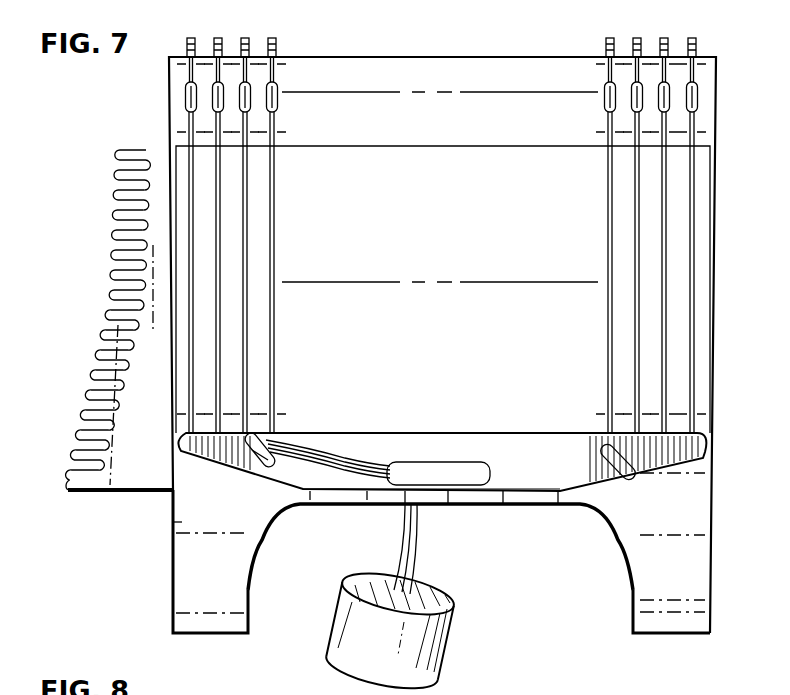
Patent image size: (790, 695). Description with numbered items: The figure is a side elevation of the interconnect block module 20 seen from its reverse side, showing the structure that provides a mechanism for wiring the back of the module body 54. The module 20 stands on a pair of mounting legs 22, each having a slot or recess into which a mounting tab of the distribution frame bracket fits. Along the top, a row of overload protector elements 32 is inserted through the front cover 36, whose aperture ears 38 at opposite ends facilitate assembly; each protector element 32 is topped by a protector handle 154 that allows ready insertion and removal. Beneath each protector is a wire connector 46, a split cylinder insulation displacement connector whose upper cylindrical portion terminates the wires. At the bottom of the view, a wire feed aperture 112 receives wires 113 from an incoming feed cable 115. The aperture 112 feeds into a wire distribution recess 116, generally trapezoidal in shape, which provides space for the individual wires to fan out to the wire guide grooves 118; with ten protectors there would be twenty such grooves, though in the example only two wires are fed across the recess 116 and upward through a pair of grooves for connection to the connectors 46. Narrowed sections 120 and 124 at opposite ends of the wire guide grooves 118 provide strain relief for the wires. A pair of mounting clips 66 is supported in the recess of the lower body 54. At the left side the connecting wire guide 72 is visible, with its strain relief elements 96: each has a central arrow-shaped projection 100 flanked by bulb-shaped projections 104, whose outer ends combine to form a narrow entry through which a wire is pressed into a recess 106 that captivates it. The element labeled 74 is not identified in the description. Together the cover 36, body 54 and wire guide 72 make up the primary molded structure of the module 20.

The interconnect block module 20 is at (480, 550).
The mounting legs 22 is at (222, 588).
The overload protector element 32 is at (282, 44).
The front cover 36 is at (436, 131).
The aperture ears 38 is at (167, 163).
The wire connector 46 is at (605, 100).
The module body 54 is at (250, 590).
The mounting clips 66 is at (267, 462).
The connecting wire guide 72 is at (138, 478).
The spring end 74 is at (60, 500).
The strain relief elements 96 is at (104, 313).
The arrow-shaped projection 100 is at (122, 198).
The bulb-shaped projection 104 is at (122, 218).
The recess 106 is at (140, 246).
The wire feed aperture 112 is at (440, 482).
The wires 113 is at (396, 560).
The incoming feed cable 115 is at (423, 633).
The wire distribution recess 116 is at (545, 477).
The wire guide grooves 118 is at (607, 184).
The narrowed section 120 is at (600, 432).
The narrowed section 124 is at (607, 74).
The protector handle 154 is at (606, 44).